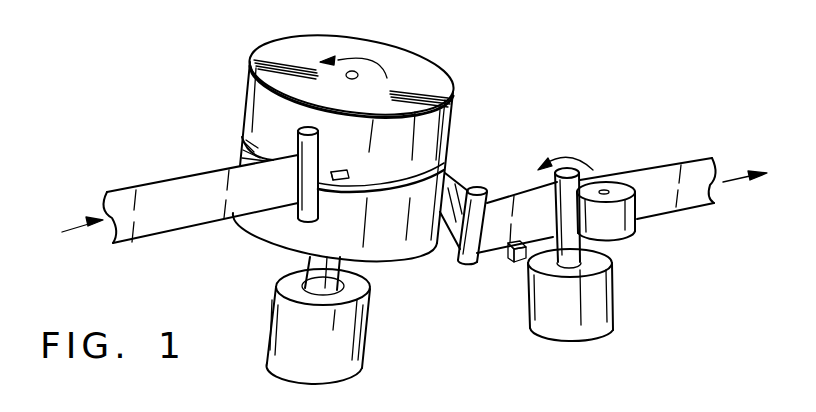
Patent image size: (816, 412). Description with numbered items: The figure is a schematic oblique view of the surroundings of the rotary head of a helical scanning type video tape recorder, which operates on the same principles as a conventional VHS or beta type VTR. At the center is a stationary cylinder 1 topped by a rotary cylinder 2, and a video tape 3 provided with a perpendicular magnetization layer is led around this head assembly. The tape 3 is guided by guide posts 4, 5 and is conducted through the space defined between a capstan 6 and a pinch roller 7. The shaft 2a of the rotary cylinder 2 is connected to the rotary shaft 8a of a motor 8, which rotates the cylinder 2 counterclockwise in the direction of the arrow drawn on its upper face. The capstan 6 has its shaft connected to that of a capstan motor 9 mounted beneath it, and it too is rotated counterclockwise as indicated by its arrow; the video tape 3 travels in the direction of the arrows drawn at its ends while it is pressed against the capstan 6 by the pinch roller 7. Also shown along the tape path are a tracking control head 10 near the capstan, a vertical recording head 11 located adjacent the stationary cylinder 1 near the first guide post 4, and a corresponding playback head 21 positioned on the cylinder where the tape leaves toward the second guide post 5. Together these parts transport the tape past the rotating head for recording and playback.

The stationary cylinder 1 is at (256, 236).
The rotary cylinder 2 is at (420, 68).
The shaft of the rotary cylinder 2a is at (353, 71).
The video tape 3 is at (150, 187).
The guide post 4 is at (320, 132).
The guide post 5 is at (478, 187).
The capstan 6 is at (568, 167).
The pinch roller 7 is at (636, 231).
The motor 8 is at (364, 340).
The rotary shaft of the motor 8a is at (343, 260).
The capstan motor 9 is at (614, 290).
The tracking control head 10 is at (513, 262).
The vertical recording head 11 is at (336, 181).
The playback head 21 is at (447, 158).